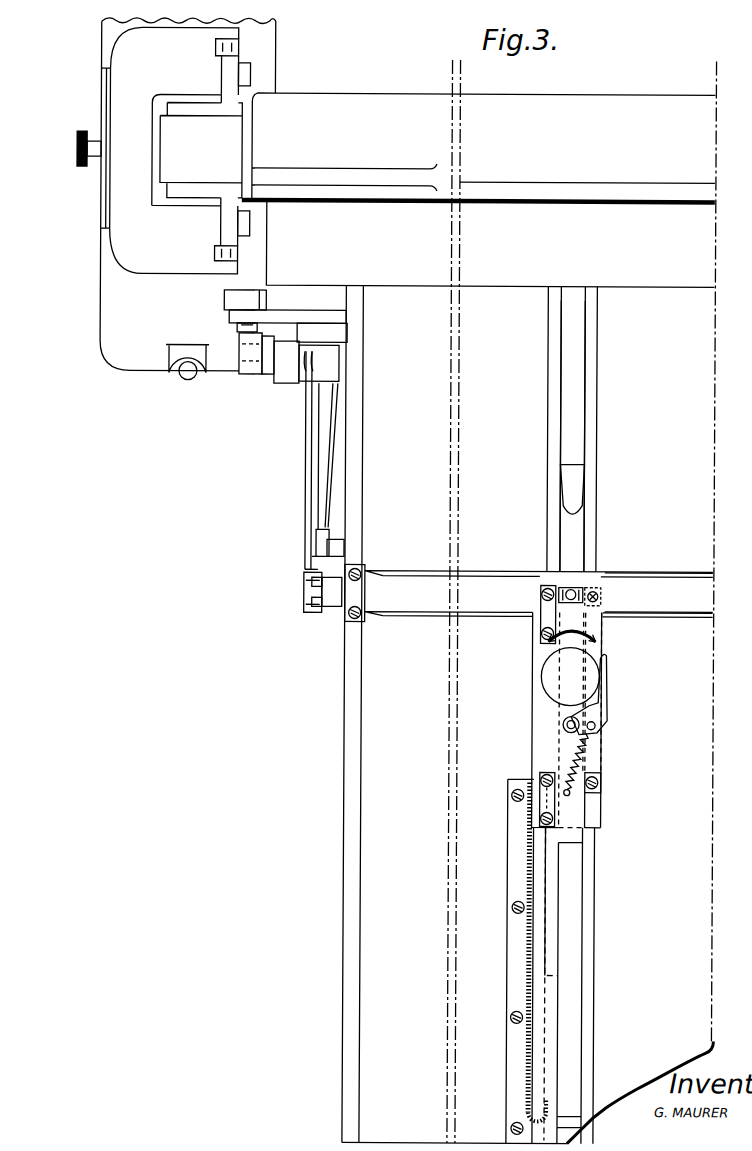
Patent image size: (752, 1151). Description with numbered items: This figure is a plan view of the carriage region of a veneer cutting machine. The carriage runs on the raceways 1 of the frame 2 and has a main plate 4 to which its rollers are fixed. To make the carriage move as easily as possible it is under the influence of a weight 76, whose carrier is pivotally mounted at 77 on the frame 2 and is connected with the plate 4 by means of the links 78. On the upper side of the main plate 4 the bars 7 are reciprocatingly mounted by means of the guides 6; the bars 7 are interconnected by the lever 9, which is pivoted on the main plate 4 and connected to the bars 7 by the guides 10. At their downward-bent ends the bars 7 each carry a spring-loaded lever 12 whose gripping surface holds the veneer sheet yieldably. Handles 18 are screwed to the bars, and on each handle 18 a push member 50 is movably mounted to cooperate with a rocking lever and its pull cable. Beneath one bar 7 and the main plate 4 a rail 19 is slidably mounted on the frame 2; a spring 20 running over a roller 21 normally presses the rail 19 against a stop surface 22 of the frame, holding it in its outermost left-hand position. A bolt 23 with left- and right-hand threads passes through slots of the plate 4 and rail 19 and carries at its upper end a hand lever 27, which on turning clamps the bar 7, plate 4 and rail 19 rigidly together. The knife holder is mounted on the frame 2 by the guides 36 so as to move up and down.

The raceways 1 is at (345, 680).
The frame 2 is at (138, 362).
The main plate 4 is at (391, 583).
The guides 6 is at (604, 590).
The bars 7 is at (578, 527).
The lever 9 is at (658, 580).
The guides 10 is at (573, 587).
The spring-loaded lever 12 is at (578, 488).
The handles 18 is at (548, 666).
The rail 19 is at (575, 1072).
The spring 20 is at (528, 1036).
The roller 21 is at (541, 1105).
The stop surface 22 is at (573, 1114).
The bolt 23 is at (560, 724).
The hand lever 27 is at (607, 675).
The guides 36 is at (211, 112).
The push member 50 is at (600, 640).
The weight 76 is at (311, 329).
The pivot 77 is at (270, 368).
The links 78 is at (327, 603).